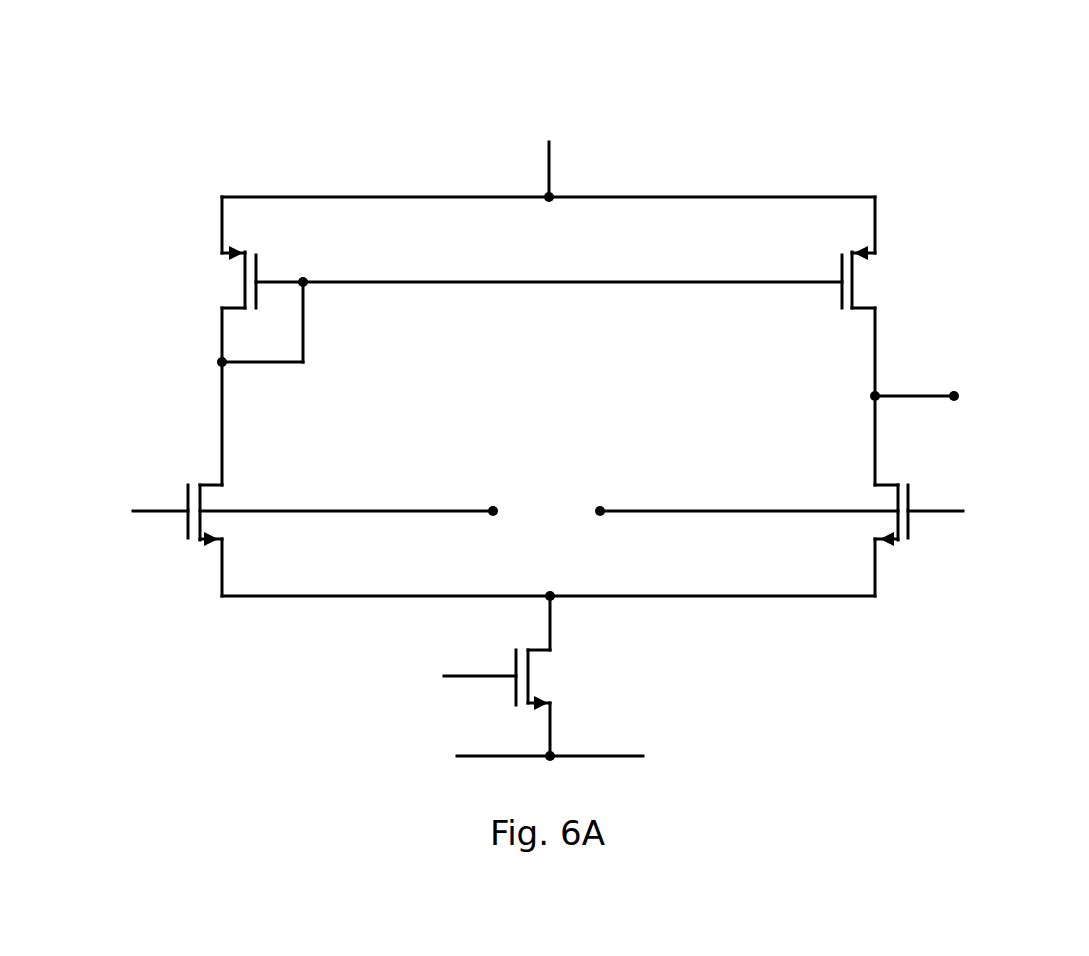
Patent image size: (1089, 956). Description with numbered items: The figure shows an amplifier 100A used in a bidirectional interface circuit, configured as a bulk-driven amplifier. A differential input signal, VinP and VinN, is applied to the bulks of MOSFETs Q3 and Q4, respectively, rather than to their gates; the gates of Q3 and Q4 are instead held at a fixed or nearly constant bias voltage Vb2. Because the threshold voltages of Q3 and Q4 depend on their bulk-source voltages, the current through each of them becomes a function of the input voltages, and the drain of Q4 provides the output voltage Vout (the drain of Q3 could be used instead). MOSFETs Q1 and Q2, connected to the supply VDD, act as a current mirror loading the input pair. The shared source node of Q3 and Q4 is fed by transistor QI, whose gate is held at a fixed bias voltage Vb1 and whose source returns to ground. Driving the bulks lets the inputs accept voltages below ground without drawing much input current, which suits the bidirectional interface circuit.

The amplifier 100A is at (948, 118).
The MOSFET Q1 is at (200, 277).
The MOSFET Q2 is at (894, 277).
The MOSFET Q3 is at (233, 534).
The MOSFET Q4 is at (861, 534).
The MOSFET QI is at (556, 680).